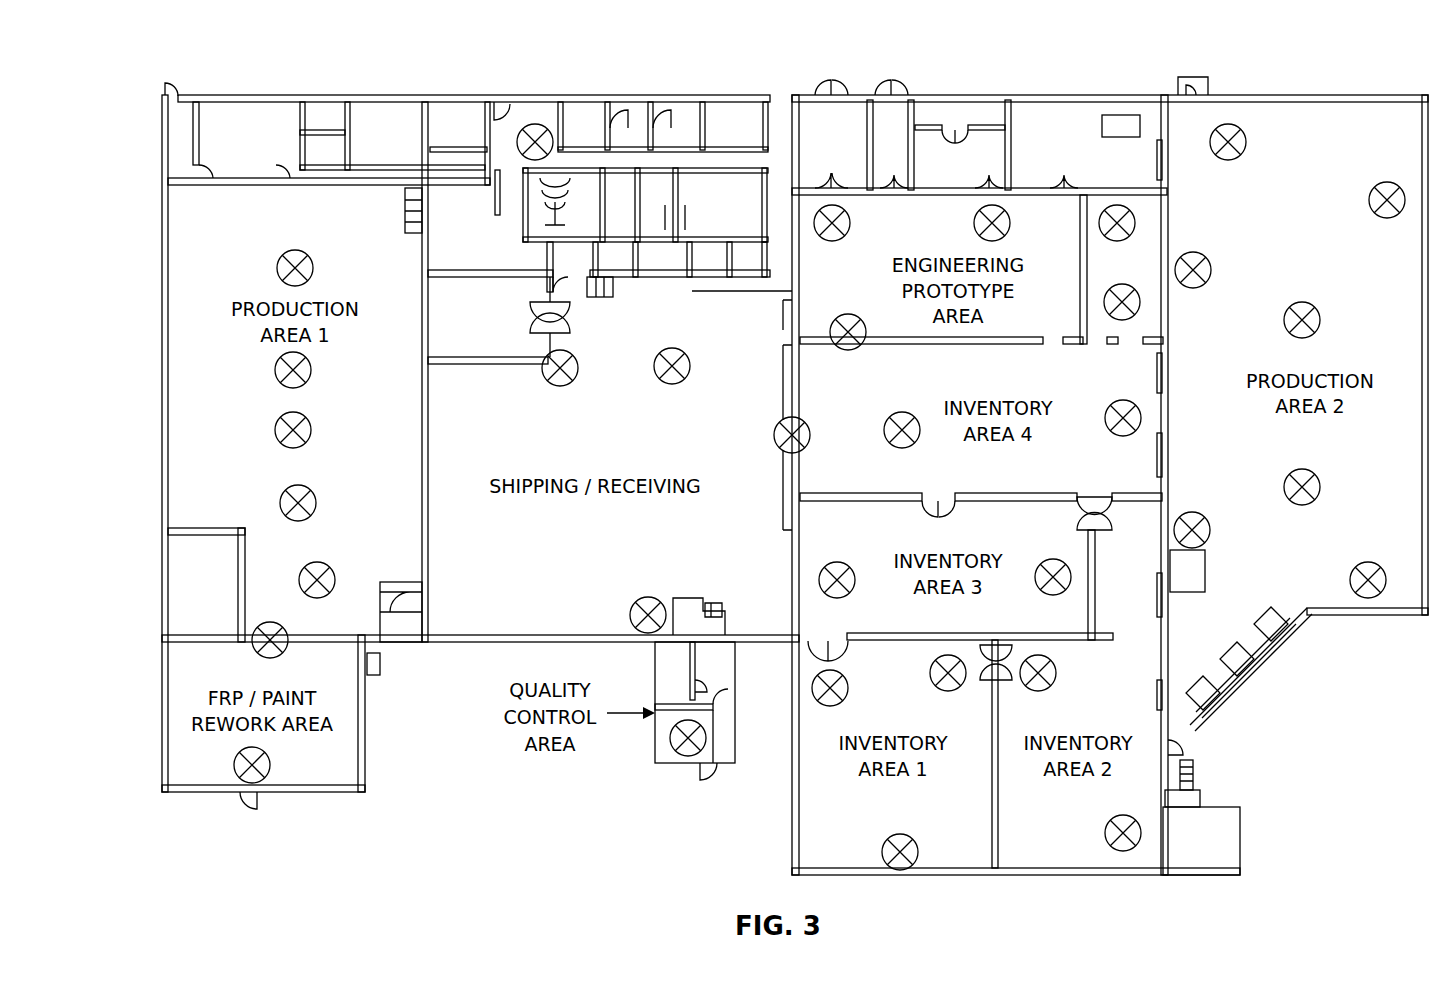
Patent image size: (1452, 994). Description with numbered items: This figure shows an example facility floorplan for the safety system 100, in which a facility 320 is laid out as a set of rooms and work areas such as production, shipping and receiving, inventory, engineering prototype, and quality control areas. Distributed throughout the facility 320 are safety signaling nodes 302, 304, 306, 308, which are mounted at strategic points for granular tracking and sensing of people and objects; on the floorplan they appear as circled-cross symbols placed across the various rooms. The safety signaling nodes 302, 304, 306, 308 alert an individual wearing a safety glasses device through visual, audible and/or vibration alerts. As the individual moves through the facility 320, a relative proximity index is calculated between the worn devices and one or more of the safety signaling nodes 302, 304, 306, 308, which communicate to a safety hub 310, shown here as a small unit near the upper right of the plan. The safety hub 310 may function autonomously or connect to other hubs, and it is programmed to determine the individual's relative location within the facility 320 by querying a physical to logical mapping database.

The system 100 is at (170, 52).
The safety signaling node 302 is at (287, 252).
The safety signaling node 304 is at (311, 372).
The safety signaling node 306 is at (311, 432).
The safety signaling node 308 is at (316, 505).
The safety hub 310 is at (1122, 115).
The facility 320 is at (160, 372).